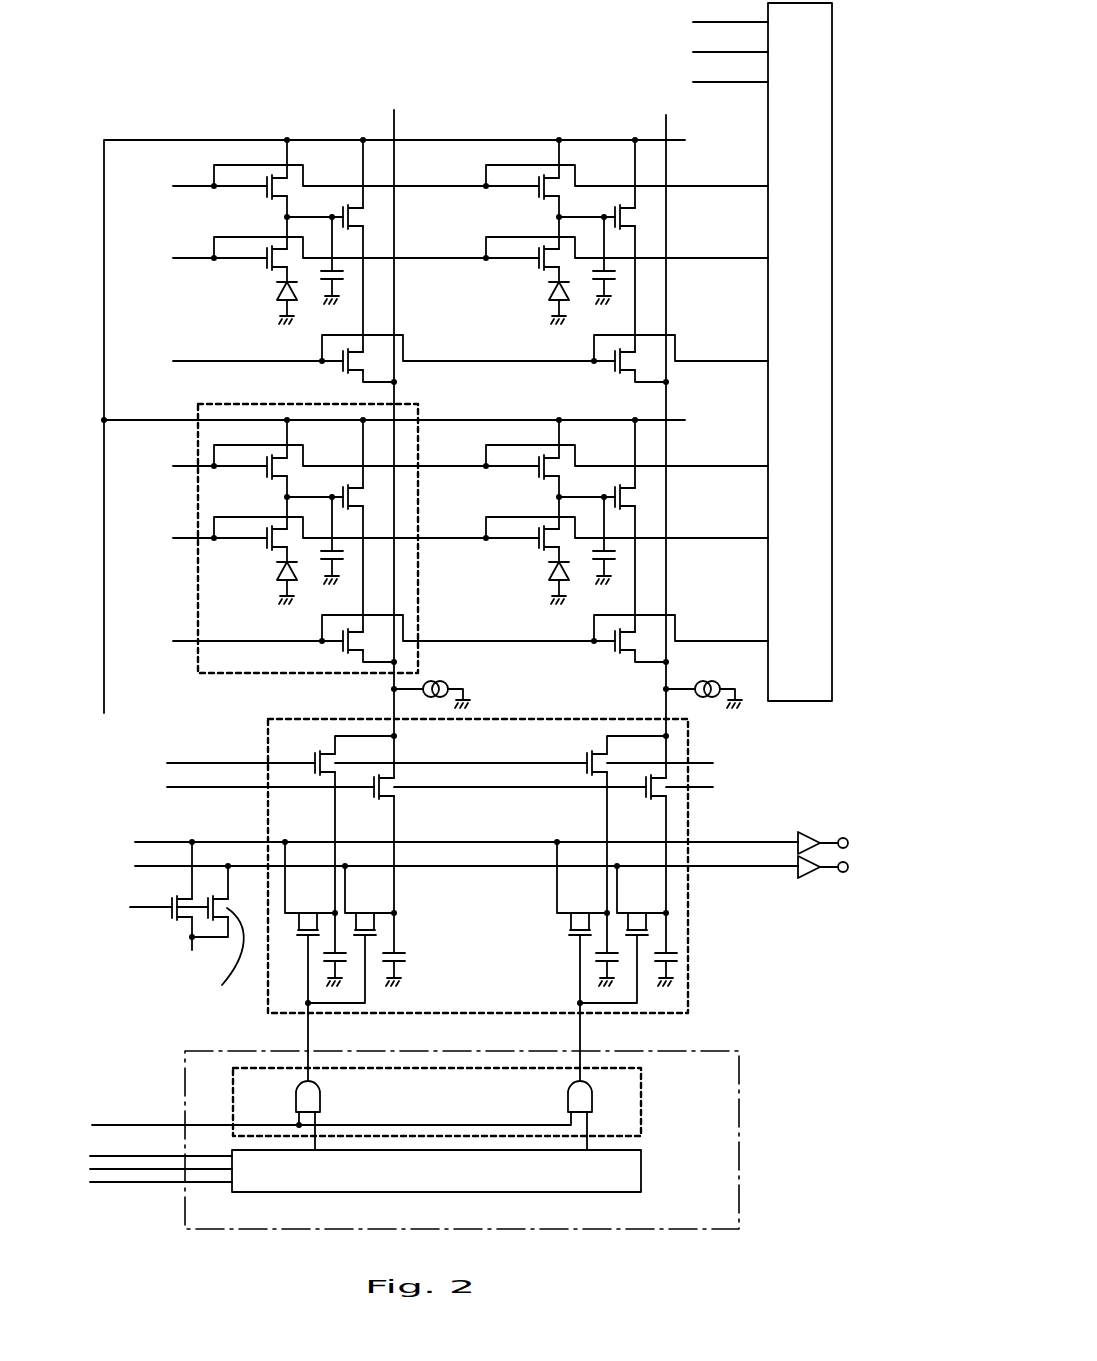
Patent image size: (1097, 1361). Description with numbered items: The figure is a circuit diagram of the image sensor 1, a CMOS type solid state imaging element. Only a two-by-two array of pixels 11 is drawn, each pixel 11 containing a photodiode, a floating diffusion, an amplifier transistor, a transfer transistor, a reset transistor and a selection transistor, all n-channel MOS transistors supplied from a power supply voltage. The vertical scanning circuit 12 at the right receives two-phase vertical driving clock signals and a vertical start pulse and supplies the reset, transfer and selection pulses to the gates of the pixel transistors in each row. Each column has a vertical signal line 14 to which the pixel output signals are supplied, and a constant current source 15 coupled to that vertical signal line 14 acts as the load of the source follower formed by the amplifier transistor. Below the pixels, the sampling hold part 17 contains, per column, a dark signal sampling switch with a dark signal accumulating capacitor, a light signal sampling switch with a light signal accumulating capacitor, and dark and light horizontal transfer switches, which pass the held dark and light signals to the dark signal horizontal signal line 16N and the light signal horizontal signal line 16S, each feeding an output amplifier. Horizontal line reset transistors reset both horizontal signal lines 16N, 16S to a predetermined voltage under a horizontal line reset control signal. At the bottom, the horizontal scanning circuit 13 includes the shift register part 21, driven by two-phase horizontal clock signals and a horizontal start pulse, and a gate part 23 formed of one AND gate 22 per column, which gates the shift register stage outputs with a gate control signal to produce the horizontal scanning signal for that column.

The image sensor 1 is at (438, 108).
The pixel 11 is at (430, 601).
The vertical scanning circuit 12 is at (800, 701).
The horizontal scanning circuit 13 is at (415, 1116).
The vertical signal line 14 is at (394, 288).
The constant current source 15 is at (445, 684).
The dark signal horizontal signal line 16N is at (748, 842).
The light signal horizontal signal line 16S is at (722, 866).
The sampling hold part 17 is at (688, 980).
The shift register part 21 is at (641, 1172).
The AND gate 22 is at (320, 1098).
The gate part 23 is at (641, 1101).